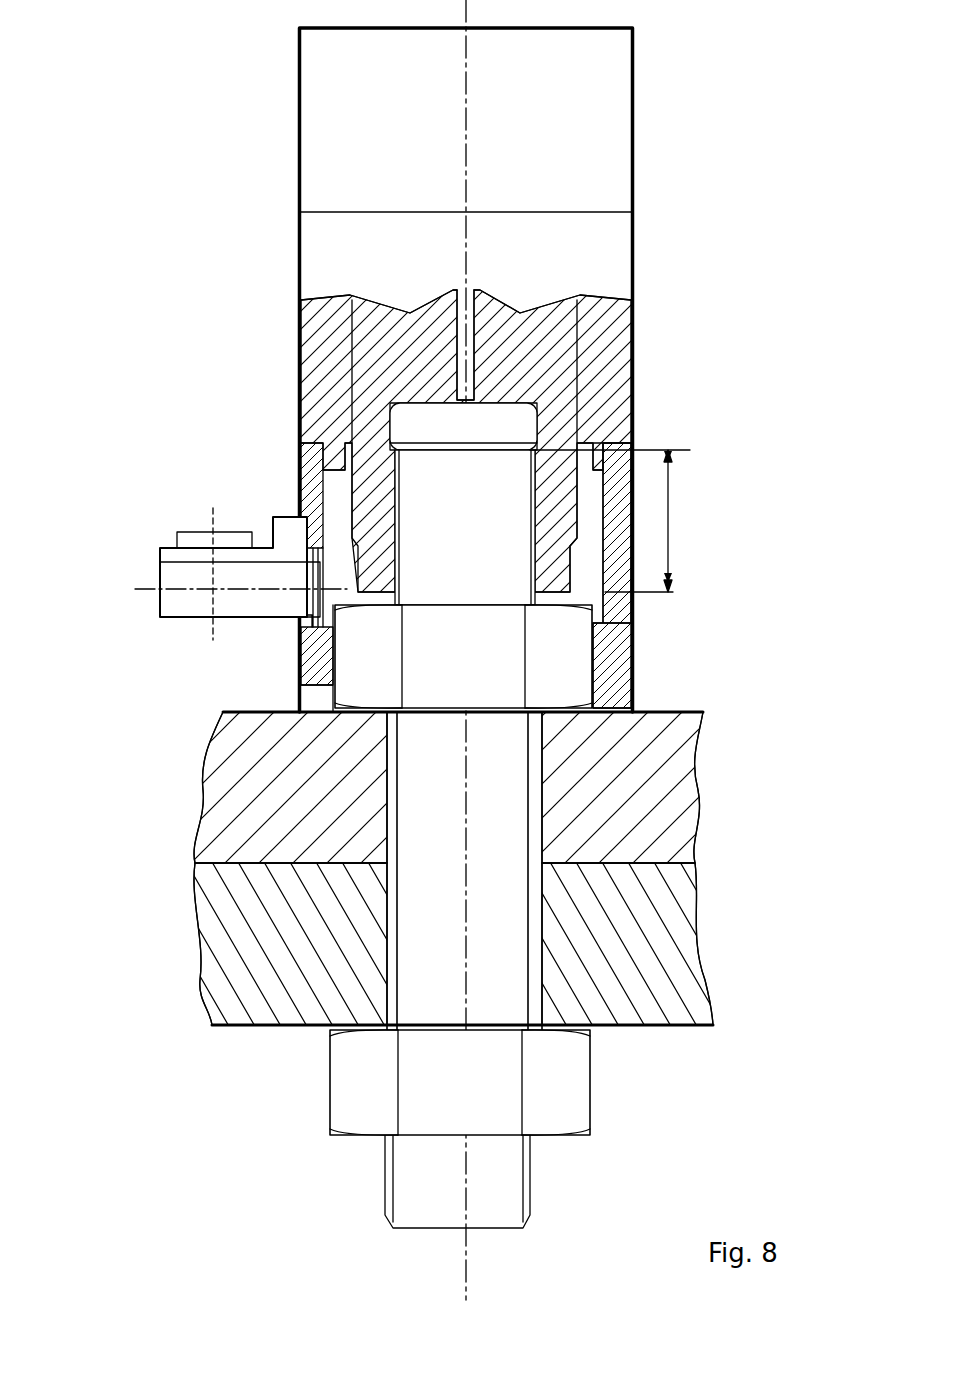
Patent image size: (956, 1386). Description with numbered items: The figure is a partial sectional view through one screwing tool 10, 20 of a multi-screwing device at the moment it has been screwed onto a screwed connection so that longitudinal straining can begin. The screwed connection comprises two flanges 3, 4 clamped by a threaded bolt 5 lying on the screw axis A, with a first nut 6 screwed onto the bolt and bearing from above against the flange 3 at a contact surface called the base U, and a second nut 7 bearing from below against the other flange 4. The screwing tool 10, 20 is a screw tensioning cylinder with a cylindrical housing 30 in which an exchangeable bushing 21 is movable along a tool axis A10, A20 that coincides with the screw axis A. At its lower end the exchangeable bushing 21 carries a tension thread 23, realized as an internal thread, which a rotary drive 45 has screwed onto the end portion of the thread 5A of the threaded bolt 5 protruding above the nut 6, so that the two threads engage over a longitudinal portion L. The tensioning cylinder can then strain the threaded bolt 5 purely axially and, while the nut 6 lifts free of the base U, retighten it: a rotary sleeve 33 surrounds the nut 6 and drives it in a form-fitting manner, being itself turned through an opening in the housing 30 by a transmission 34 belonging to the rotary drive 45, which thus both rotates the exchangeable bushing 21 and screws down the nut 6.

The screwing tool 10 is at (428, 399).
The screwing tool 20 is at (428, 399).
The tool axis A10 is at (638, 650).
The tool axis A20 is at (466, 153).
The cylindrical housing 30 is at (583, 237).
The exchangeable bushing 21 is at (550, 384).
The tension thread 23 is at (530, 482).
The thread 5A is at (425, 507).
The longitudinal portion L is at (611, 521).
The rotary sleeve 33 is at (297, 653).
The rotary drive 45 is at (278, 627).
The transmission 34 is at (203, 577).
The first nut 6 is at (553, 637).
The base U is at (655, 712).
The flange 3 is at (218, 808).
The flange 4 is at (222, 935).
The threaded bolt 5 is at (547, 805).
The screw axis A is at (460, 907).
The second nut 7 is at (363, 1085).